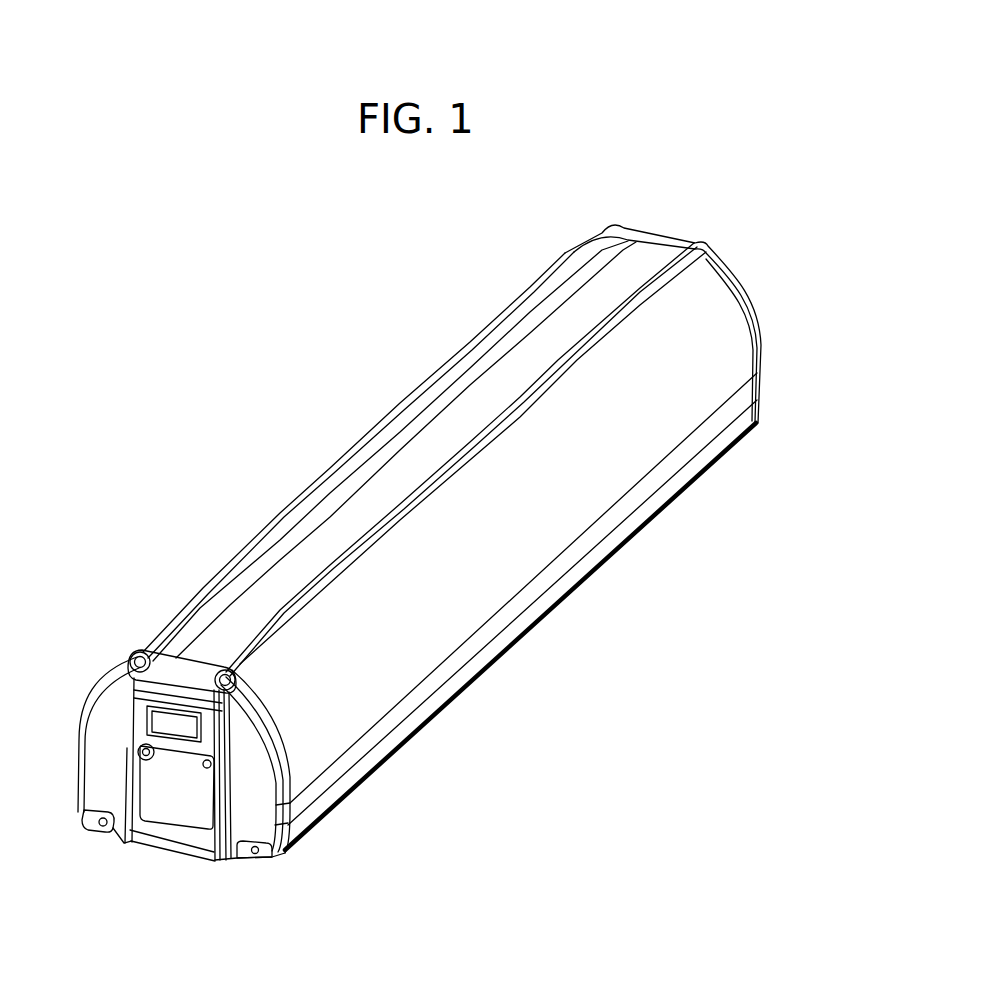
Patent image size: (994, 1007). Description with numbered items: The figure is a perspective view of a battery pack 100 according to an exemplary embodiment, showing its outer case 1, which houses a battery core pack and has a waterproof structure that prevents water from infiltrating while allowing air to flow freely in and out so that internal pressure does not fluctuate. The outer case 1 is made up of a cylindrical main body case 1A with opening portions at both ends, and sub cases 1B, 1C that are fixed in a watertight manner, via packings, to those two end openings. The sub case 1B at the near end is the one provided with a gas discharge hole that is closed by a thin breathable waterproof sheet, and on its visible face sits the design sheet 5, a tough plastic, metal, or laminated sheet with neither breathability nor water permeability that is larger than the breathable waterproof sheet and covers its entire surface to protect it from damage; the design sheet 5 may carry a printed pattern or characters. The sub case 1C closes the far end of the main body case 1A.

The battery pack 100 is at (214, 306).
The outer case 1 is at (767, 598).
The main body case 1A is at (457, 593).
The sub case 1B is at (253, 777).
The sub case 1C is at (747, 275).
The design sheet 5 is at (180, 798).